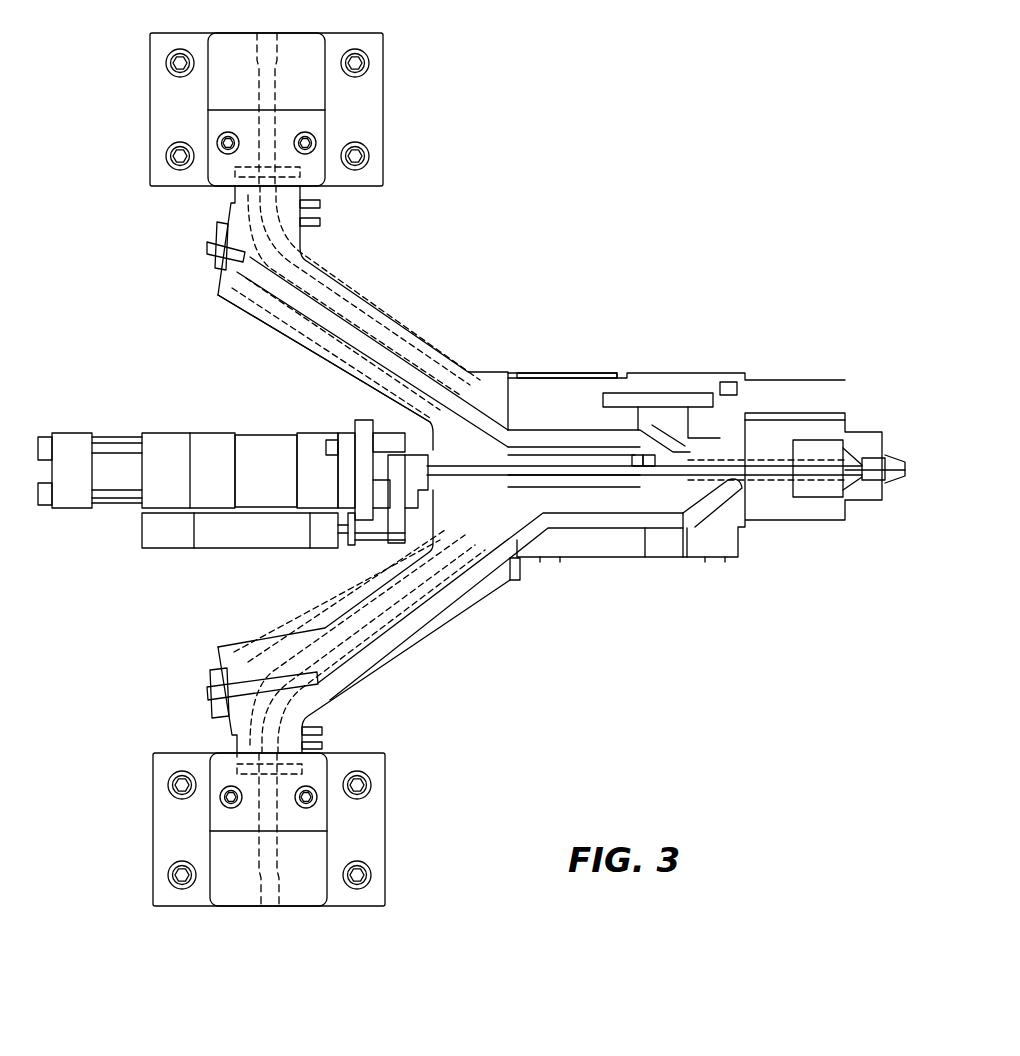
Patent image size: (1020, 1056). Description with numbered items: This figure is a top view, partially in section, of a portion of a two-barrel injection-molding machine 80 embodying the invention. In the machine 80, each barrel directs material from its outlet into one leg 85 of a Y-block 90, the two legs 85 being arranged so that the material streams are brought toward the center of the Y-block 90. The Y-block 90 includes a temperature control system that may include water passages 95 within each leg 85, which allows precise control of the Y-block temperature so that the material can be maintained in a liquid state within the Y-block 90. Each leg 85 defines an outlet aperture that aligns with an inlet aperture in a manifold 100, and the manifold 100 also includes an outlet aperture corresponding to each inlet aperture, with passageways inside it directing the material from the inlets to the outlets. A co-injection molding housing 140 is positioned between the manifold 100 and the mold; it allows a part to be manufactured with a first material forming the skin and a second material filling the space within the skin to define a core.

The two-barrel injection-molding machine 80 is at (670, 150).
The leg 85 is at (403, 326).
The Y-block 90 is at (318, 348).
The water passages 95 is at (332, 270).
The manifold 100 is at (562, 403).
The co-injection molding housing 140 is at (745, 410).